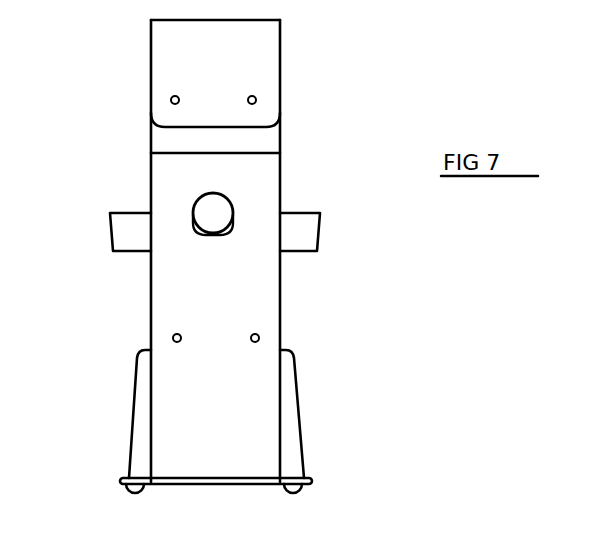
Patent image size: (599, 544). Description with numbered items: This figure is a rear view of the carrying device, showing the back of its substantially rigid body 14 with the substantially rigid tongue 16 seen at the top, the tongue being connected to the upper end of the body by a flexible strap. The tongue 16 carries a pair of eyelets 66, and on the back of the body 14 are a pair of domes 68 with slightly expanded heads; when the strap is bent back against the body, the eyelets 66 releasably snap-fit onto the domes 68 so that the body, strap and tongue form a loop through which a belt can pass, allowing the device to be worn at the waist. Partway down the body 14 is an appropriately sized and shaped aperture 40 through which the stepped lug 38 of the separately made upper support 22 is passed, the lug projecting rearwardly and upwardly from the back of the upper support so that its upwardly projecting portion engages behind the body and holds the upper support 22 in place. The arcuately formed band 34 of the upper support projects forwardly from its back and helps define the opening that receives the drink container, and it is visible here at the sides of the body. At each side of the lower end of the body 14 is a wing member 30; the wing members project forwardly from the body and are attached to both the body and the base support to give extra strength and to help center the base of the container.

The body 14 is at (268, 290).
The tongue 16 is at (268, 68).
The upper support 22 is at (325, 221).
The wing member 30 is at (293, 420).
The arcuately formed band 34 is at (310, 240).
The stepped lug 38 is at (208, 207).
The aperture 40 is at (207, 235).
The eyelets 66 is at (171, 100).
The domes 68 is at (173, 339).